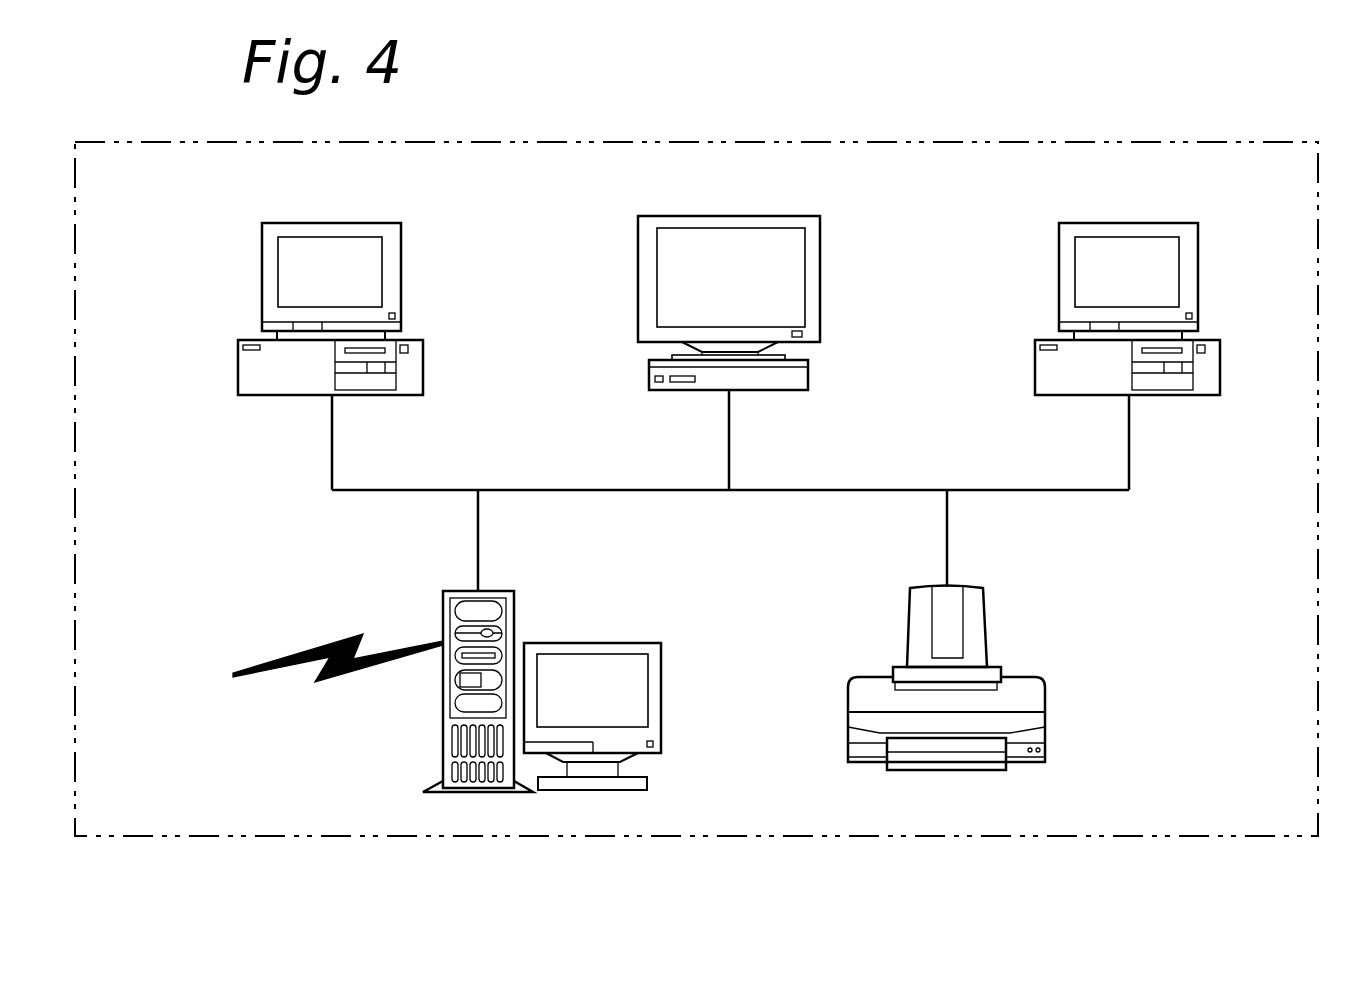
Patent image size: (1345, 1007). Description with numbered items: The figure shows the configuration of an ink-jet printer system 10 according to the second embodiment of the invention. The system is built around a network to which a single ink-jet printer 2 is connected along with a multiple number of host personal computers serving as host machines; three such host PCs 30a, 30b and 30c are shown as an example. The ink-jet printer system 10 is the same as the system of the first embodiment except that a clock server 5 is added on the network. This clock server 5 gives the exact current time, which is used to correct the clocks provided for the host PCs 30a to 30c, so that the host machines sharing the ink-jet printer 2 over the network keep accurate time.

The ink-jet printer system 10 is at (720, 836).
The host PC 30a is at (401, 241).
The host PC 30b is at (820, 241).
The host PC 30c is at (1198, 241).
The clock server 5 is at (443, 722).
The ink-jet printer 2 is at (983, 593).